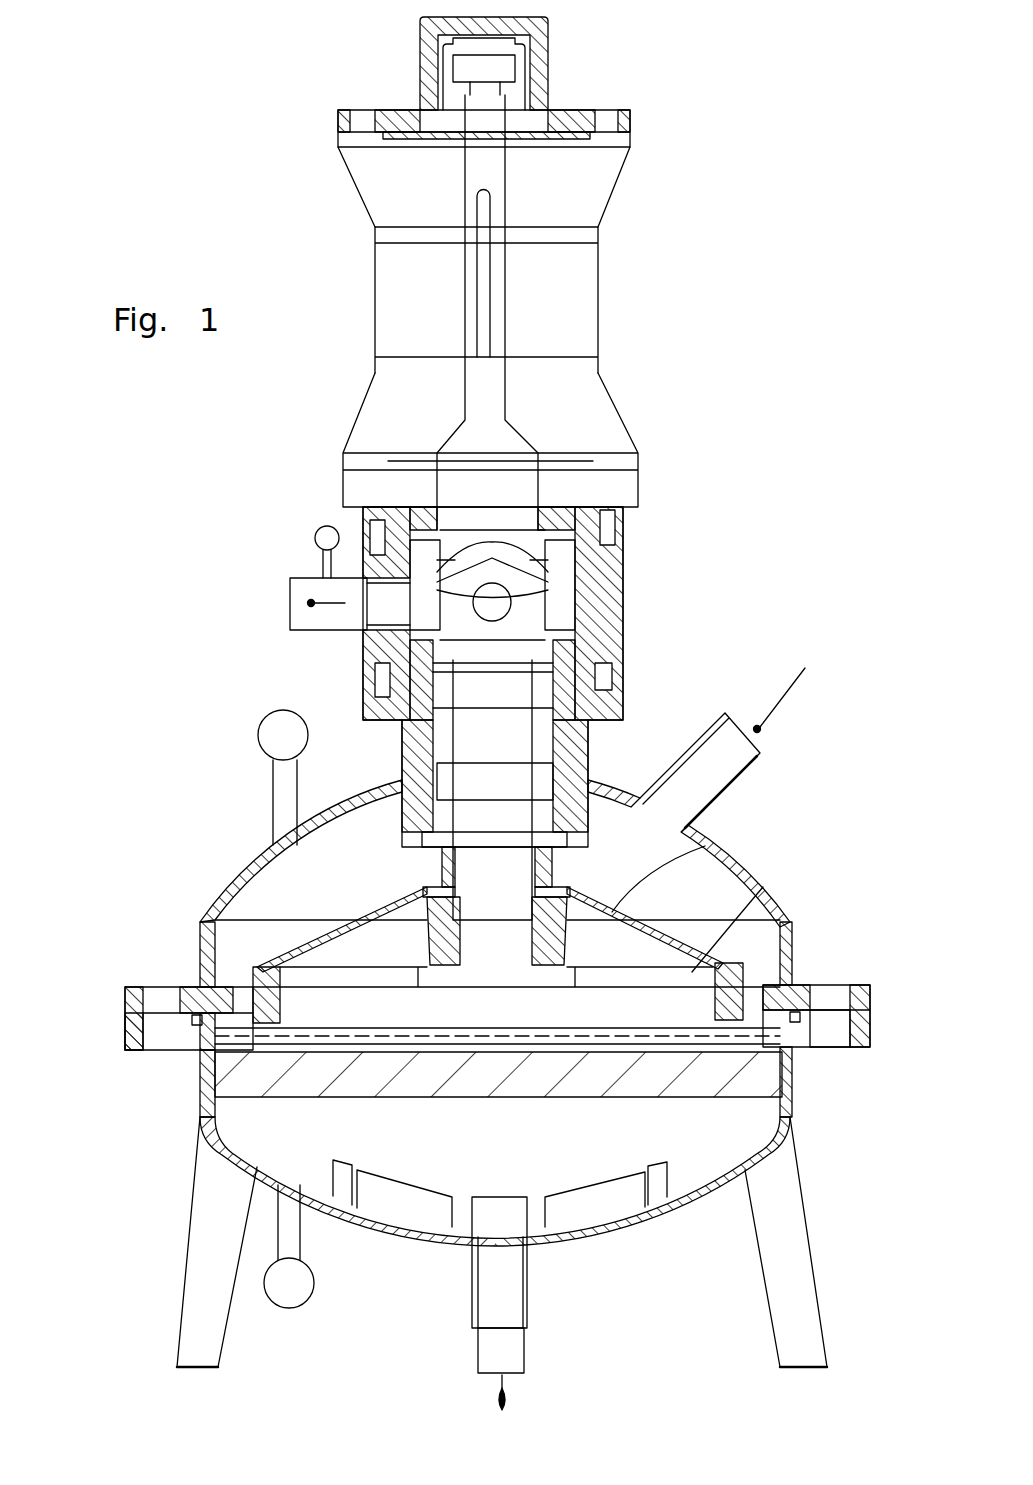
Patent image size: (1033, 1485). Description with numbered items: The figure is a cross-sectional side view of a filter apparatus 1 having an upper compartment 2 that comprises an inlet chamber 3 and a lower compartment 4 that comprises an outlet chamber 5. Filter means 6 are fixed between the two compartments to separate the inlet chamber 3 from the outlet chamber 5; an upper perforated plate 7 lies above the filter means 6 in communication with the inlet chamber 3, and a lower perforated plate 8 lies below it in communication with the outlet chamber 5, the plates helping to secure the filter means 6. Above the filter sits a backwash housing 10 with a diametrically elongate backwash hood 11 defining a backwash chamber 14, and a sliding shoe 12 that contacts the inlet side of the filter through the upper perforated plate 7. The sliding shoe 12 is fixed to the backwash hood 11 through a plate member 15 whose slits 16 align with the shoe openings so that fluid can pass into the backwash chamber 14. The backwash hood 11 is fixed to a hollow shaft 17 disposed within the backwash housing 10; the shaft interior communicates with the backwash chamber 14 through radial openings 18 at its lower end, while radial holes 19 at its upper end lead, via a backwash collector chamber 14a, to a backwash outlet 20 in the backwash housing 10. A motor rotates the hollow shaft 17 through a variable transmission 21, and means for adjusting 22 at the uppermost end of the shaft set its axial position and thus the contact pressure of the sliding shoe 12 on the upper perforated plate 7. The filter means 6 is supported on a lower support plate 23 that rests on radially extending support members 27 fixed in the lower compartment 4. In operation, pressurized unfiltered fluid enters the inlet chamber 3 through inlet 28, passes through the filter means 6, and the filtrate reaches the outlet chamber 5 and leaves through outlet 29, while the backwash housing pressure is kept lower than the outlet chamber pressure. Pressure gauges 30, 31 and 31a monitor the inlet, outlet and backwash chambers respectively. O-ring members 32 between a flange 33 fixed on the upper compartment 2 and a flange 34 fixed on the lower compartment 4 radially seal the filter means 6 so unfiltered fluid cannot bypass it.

The filter apparatus 1 is at (491, 1029).
The upper compartment 2 is at (226, 890).
The inlet chamber 3 is at (268, 882).
The lower compartment 4 is at (344, 1218).
The outlet chamber 5 is at (418, 1210).
The filter means 6 is at (212, 1037).
The upper perforated plate 7 is at (247, 987).
The lower perforated plate 8 is at (204, 1097).
The backwash housing 10 is at (657, 620).
The backwash hood 11 is at (706, 834).
The sliding shoe 12 is at (790, 955).
The backwash chamber 14 is at (630, 937).
The backwash collector chamber 14a is at (553, 571).
The plate member 15 is at (795, 922).
The slits 16 is at (748, 912).
The hollow shaft 17 is at (560, 880).
The radial openings 18 is at (421, 905).
The radial holes 19 is at (500, 612).
The backwash outlet 20 is at (373, 597).
The variable transmission 21 is at (492, 276).
The means for adjusting 22 is at (651, 18).
The lower support plate 23 is at (790, 1097).
The support members 27 is at (622, 1168).
The inlet 28 is at (762, 767).
The outlet 29 is at (528, 1282).
The pressure gauge 30 is at (298, 770).
The pressure gauge 31 is at (284, 1275).
The pressure gauge 31a is at (322, 526).
The o-ring members 32 is at (800, 1042).
The flange 33 is at (140, 985).
The flange 34 is at (126, 1047).